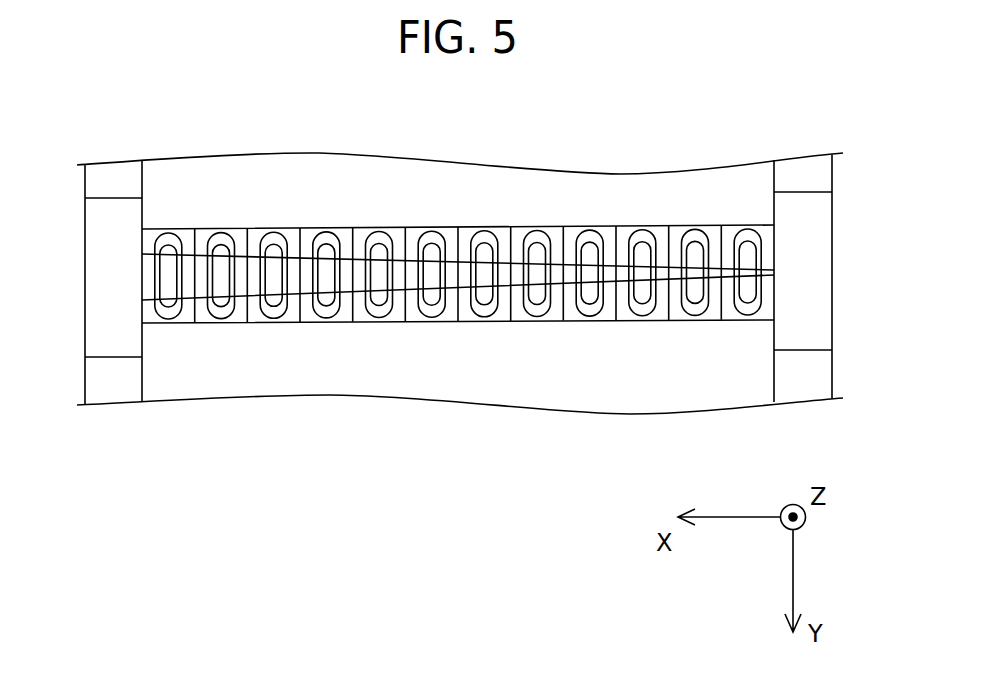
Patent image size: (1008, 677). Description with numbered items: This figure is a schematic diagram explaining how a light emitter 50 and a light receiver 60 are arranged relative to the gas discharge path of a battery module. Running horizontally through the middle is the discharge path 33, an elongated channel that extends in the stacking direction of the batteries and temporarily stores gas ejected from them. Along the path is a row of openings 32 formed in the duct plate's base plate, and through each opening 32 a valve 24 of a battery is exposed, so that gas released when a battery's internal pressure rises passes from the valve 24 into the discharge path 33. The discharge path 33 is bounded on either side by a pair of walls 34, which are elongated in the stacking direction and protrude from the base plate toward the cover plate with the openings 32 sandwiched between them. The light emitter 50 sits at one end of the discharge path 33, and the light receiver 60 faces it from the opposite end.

The valve 24 is at (382, 237).
The opening 32 is at (392, 245).
The discharge path 33 is at (557, 243).
The wall 34 is at (650, 190).
The light emitter 50 is at (808, 257).
The light receiver 60 is at (107, 261).